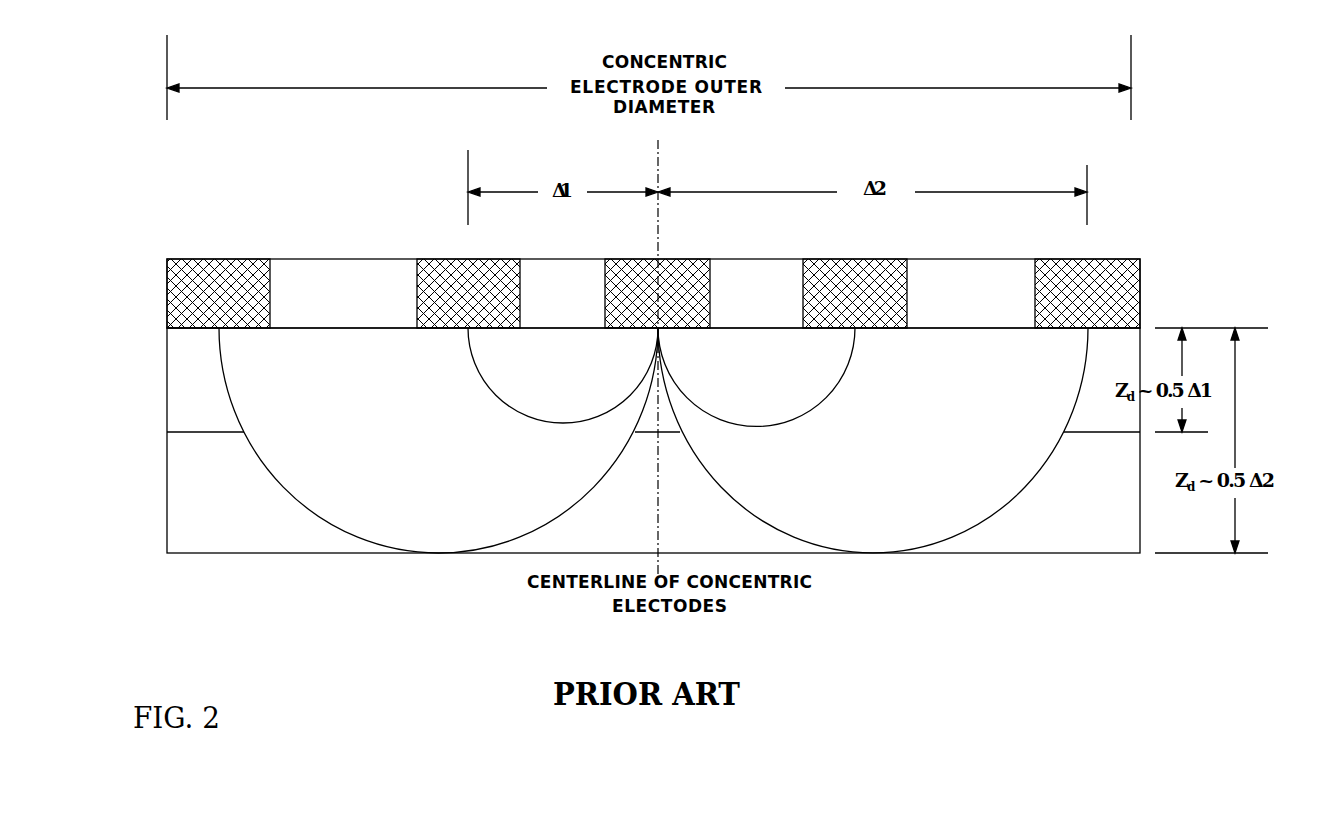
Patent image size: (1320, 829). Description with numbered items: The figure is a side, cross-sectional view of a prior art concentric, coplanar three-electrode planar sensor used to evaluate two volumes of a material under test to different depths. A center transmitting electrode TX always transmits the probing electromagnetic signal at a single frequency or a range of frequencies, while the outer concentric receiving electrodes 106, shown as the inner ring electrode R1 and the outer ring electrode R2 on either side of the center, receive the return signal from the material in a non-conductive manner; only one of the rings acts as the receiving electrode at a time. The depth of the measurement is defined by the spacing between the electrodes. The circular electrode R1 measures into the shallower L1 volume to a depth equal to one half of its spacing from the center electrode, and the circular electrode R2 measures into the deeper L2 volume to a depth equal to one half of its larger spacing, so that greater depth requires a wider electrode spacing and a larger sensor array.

The receiving electrodes 106 is at (653, 249).
The circular electrode R1 is at (662, 293).
The circular electrode R2 is at (653, 293).
The transmitting electrode TX is at (657, 293).
The L1 volume L1 is at (661, 377).
The L2 volume L2 is at (653, 440).